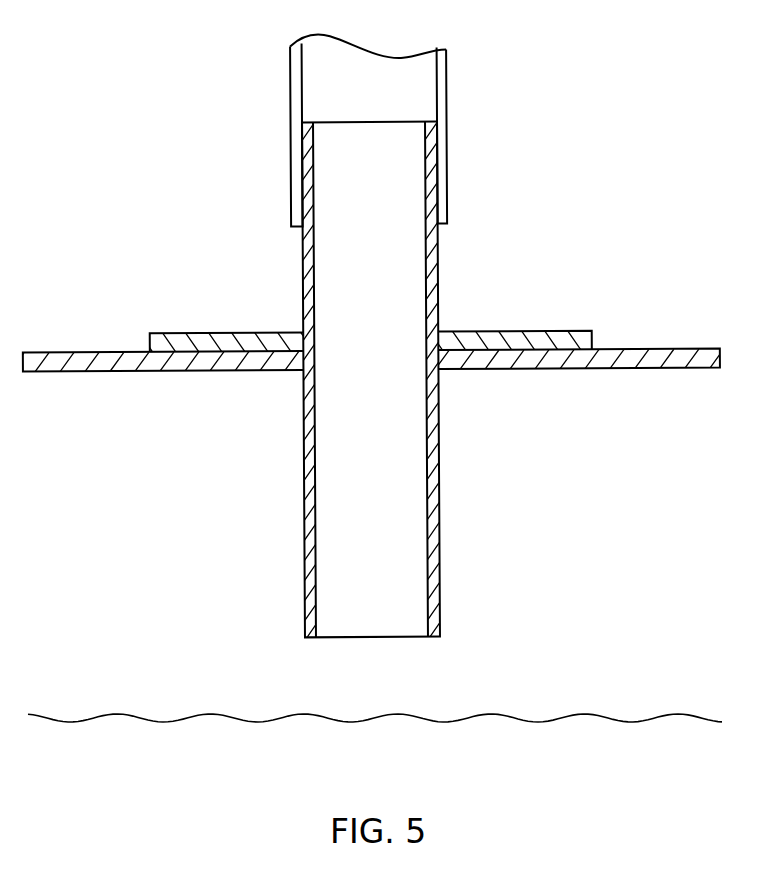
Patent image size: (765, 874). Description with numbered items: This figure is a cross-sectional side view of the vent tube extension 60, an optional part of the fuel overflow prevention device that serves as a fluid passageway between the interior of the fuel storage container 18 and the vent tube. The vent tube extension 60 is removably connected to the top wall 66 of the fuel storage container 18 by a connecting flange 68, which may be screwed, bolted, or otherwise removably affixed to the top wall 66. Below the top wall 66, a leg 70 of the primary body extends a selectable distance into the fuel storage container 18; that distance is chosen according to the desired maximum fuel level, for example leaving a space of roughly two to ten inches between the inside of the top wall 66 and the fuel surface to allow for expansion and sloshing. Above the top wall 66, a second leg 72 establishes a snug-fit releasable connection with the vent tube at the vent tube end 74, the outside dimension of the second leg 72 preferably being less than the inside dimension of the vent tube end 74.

The fuel storage container 18 is at (687, 471).
The vent tube extension 60 is at (218, 90).
The top wall 66 is at (200, 370).
The connecting flange 68 is at (220, 333).
The leg 70 is at (439, 467).
The second leg 72 is at (447, 205).
The vent tube end 74 is at (291, 157).